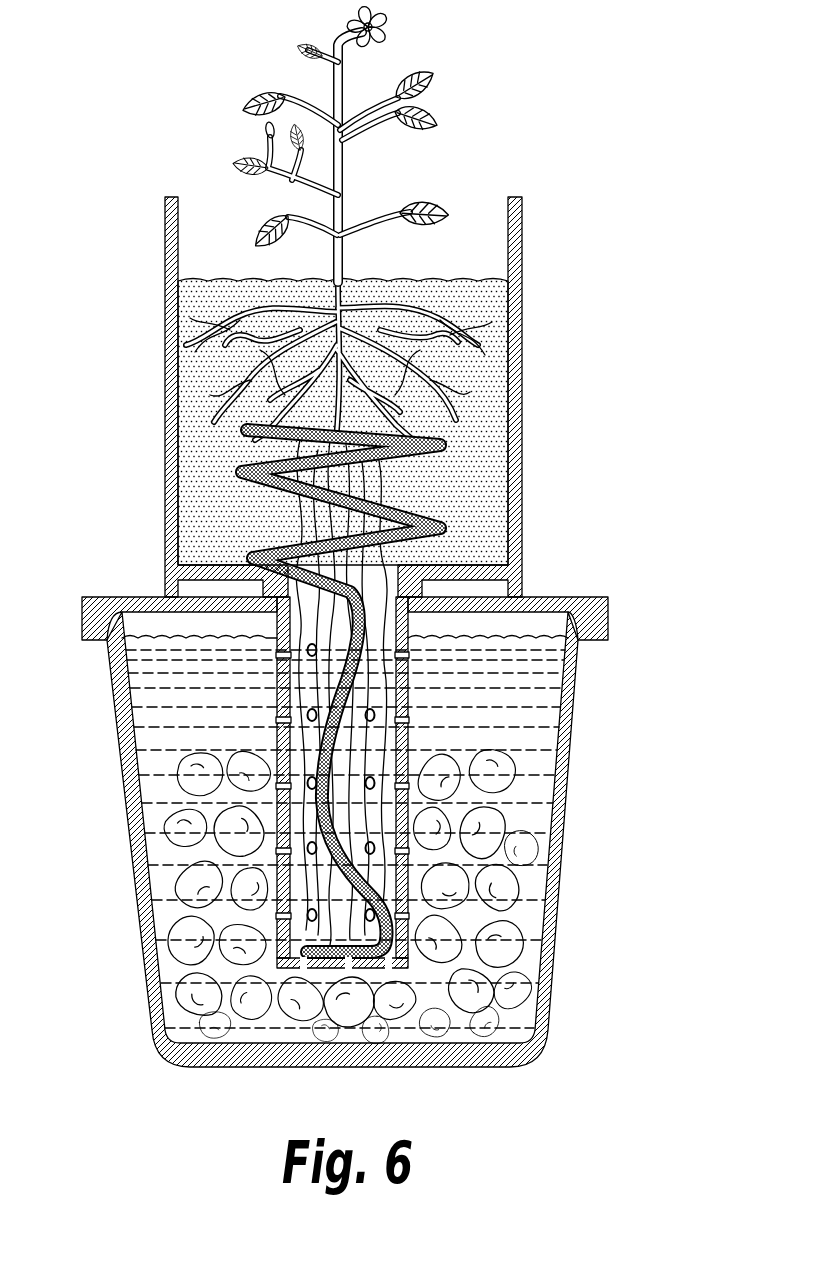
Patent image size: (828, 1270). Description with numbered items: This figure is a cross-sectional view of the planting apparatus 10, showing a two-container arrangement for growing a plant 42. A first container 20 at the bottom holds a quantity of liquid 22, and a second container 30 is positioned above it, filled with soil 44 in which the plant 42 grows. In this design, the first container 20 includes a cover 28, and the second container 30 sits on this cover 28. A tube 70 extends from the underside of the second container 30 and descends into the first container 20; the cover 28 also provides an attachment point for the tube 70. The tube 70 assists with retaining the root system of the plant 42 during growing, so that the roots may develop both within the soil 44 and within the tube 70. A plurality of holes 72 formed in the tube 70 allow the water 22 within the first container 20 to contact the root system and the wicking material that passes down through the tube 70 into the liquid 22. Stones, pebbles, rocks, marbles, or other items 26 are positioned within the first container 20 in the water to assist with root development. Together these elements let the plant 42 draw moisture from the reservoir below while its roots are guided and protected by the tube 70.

The planting apparatus 10 is at (590, 240).
The first container 20 is at (553, 793).
The quantity of liquid 22 is at (523, 700).
The stones, pebbles, rocks, marbles, or other items 26 is at (503, 975).
The cover 28 is at (583, 597).
The second container 30 is at (515, 472).
The plant 42 is at (407, 94).
The soil 44 is at (483, 412).
The tube 70 is at (275, 624).
The holes 72 is at (276, 783).